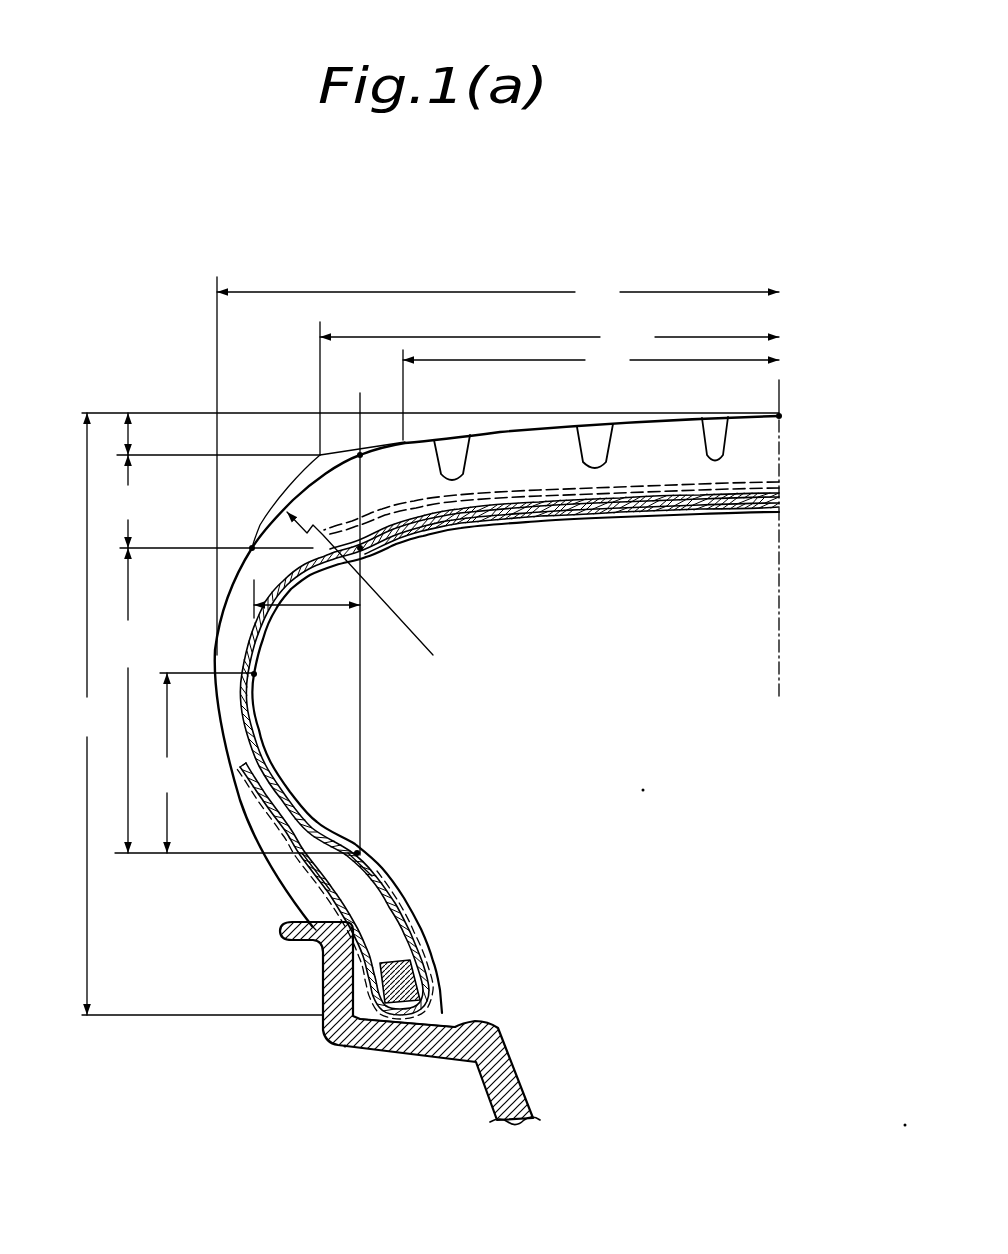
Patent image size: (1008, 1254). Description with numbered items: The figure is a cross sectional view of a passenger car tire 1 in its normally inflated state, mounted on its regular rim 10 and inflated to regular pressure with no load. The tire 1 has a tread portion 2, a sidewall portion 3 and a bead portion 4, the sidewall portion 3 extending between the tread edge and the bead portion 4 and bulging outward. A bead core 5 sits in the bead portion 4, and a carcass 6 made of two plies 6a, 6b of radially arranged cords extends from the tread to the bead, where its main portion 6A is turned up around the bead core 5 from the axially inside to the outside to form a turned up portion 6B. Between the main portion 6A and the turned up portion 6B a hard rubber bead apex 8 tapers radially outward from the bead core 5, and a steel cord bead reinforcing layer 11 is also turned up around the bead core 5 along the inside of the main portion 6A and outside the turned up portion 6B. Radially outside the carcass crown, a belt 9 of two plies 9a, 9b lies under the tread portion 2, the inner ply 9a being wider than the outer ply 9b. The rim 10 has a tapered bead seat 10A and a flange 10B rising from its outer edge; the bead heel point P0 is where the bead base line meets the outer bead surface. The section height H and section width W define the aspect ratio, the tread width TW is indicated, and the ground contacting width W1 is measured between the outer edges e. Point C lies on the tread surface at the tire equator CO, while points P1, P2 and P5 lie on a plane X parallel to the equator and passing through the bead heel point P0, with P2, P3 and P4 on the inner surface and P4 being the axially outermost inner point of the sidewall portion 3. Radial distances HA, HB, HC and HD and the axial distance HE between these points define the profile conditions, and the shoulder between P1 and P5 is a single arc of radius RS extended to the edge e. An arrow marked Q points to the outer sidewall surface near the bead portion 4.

The tire 1 is at (176, 362).
The tread portion 2 is at (770, 450).
The sidewall portion 3 is at (223, 702).
The bead portion 4 is at (427, 957).
The bead core 5 is at (413, 987).
The carcass 6 is at (537, 592).
The carcass ply 6a is at (523, 519).
The carcass ply 6b is at (557, 515).
The carcass main portion 6A is at (377, 880).
The carcass turned up portion 6B is at (327, 877).
The bead apex 8 is at (377, 927).
The belt 9 is at (738, 610).
The inner belt ply 9a is at (752, 512).
The outer belt ply 9b is at (700, 514).
The rim 10 is at (510, 1048).
The bead seat 10A is at (418, 1058).
The flange 10B is at (358, 990).
The bead reinforcing layer 11 is at (427, 1007).
The section width W is at (498, 466).
The tread width TW is at (549, 388).
The ground contacting width W1 is at (591, 394).
The axially outer edge of the ground contacting region e is at (409, 438).
The point C is at (775, 411).
The tire equator CO is at (779, 688).
The section height H is at (199, 714).
The radial distance HA is at (130, 440).
The radial distance HB is at (216, 501).
The radial distance HC is at (185, 700).
The radial distance HD is at (237, 763).
The axial distance HE is at (307, 619).
The plane X is at (360, 727).
The shoulder radius RS is at (419, 640).
The bead heel point P0 is at (345, 1047).
The point P1 is at (368, 465).
The point P2 is at (366, 554).
The point P3 is at (365, 852).
The point P4 is at (260, 676).
The point P5 is at (250, 545).
The region Q is at (259, 874).